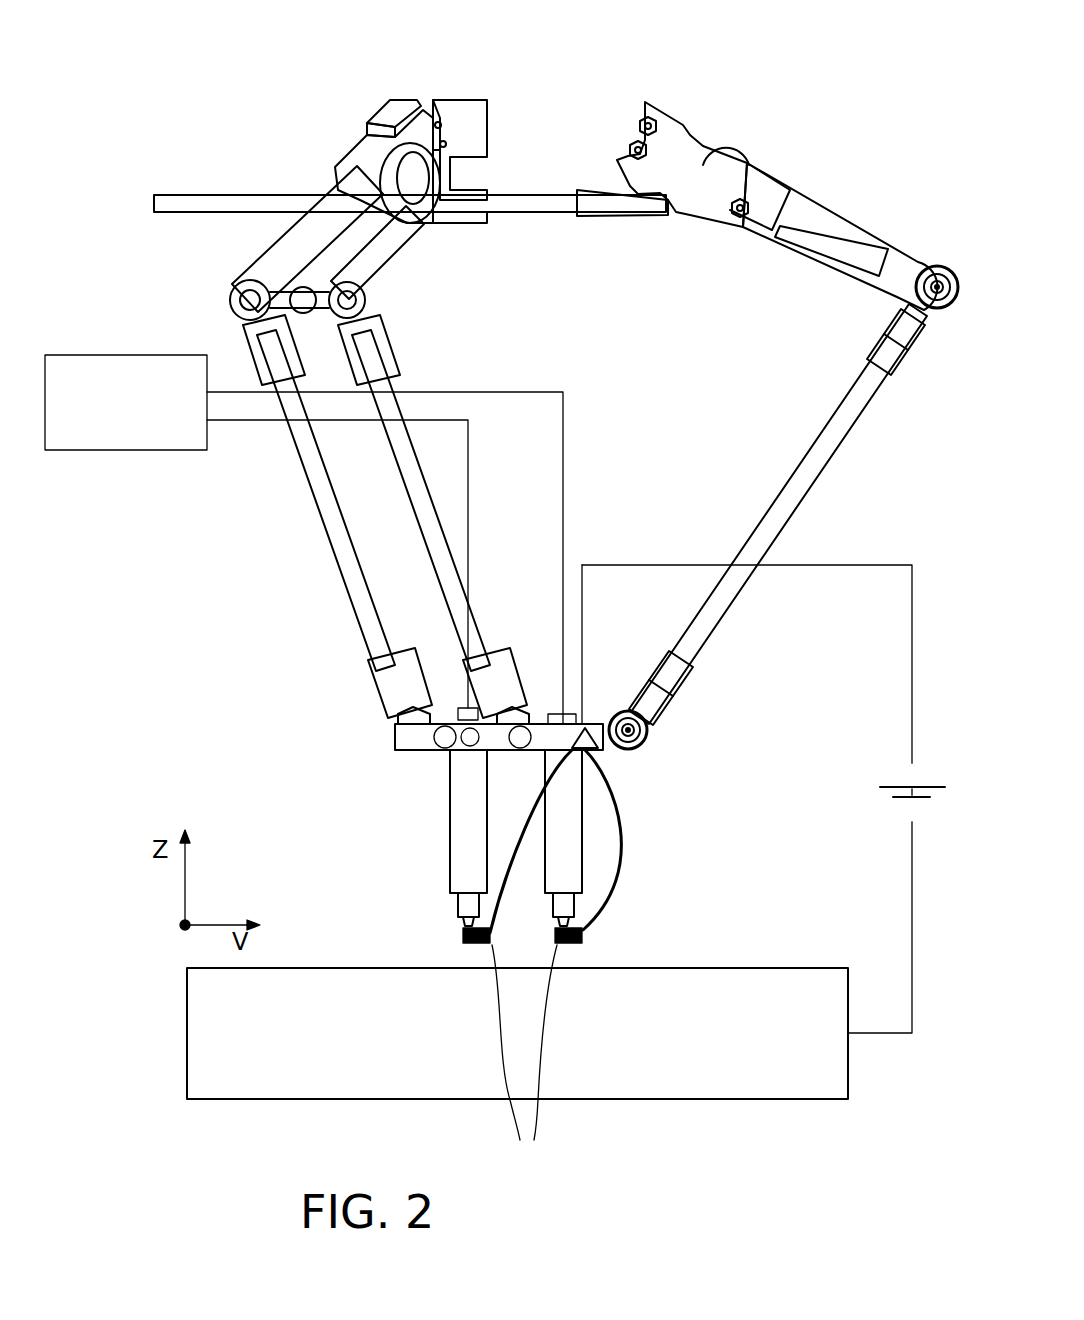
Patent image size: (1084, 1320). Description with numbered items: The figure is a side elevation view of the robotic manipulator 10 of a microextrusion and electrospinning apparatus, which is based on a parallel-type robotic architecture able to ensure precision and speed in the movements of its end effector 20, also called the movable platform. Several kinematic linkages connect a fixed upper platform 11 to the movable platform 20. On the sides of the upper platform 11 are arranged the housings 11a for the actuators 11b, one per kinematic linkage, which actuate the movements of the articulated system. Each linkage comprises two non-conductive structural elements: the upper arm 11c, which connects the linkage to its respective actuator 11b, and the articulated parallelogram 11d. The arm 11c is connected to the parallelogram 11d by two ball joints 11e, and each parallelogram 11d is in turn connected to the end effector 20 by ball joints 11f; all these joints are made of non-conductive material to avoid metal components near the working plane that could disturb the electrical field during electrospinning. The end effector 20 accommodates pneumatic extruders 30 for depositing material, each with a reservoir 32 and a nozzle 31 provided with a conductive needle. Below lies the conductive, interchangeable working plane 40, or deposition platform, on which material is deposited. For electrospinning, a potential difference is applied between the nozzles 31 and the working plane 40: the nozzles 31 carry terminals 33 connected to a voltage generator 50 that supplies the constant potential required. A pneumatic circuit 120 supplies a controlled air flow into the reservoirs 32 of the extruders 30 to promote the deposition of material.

The robotic manipulator 10 is at (787, 140).
The fixed upper platform 11 is at (195, 193).
The housings 11a is at (385, 112).
The actuators 11b is at (441, 108).
The upper arm 11c is at (315, 245).
The articulated parallelogram 11d is at (415, 500).
The ball joints 11e is at (240, 300).
The ball joints 11f is at (645, 752).
The end effector 20 is at (597, 725).
The pneumatic extruders 30 is at (445, 705).
The nozzles 31 is at (470, 921).
The reservoirs 32 is at (463, 795).
The terminals 33 is at (555, 960).
The working plane 40 is at (850, 1066).
The voltage generator 50 is at (893, 785).
The pneumatic circuit 120 is at (148, 416).